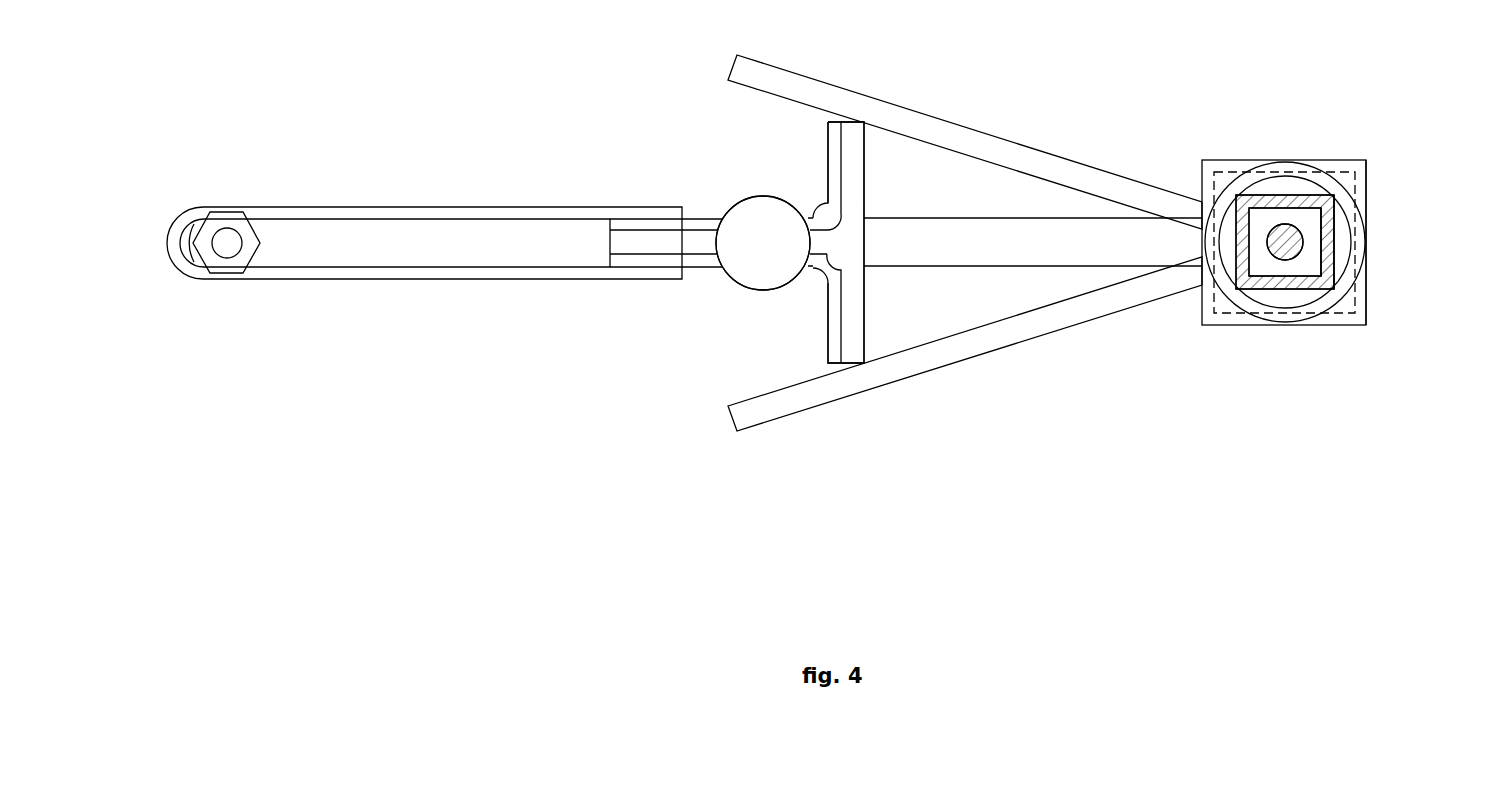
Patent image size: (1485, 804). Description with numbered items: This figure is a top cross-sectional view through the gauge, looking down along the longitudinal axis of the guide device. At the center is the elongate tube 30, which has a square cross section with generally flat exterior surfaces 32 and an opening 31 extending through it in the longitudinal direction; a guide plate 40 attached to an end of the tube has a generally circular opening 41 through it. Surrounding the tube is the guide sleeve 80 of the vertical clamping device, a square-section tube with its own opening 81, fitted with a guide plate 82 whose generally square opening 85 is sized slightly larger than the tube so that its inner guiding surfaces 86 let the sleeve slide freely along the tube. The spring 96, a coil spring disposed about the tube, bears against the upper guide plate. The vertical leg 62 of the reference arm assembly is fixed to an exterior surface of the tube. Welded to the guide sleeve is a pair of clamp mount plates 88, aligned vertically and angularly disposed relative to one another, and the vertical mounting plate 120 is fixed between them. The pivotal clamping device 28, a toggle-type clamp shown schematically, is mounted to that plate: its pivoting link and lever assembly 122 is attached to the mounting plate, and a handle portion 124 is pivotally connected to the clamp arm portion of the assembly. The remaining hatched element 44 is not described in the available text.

The pivotal clamping device 28 is at (721, 193).
The elongate tube 30 is at (1278, 198).
The opening 31 is at (1267, 220).
The exterior surfaces 32 is at (1336, 234).
The guide plate 40 is at (1287, 302).
The circular opening 41 is at (1280, 246).
The pin bore 44 is at (1292, 260).
The vertical leg 62 is at (1052, 265).
The guide sleeve 80 is at (1362, 147).
The opening 81 is at (1345, 312).
The guide plate 82 is at (1368, 281).
The square opening 85 is at (1335, 243).
The inner guiding surfaces 86 is at (1314, 260).
The clamp mount plates 88 is at (1048, 152).
The spring 96 is at (1347, 203).
The vertical mounting plate 120 is at (862, 155).
The pivoting link and lever assembly 122 is at (825, 312).
The handle portion 124 is at (757, 260).